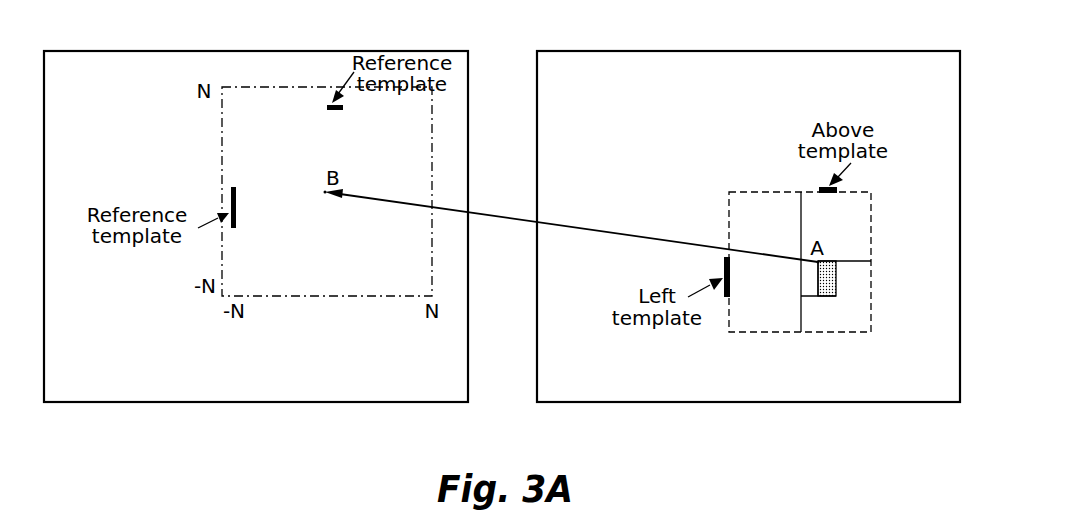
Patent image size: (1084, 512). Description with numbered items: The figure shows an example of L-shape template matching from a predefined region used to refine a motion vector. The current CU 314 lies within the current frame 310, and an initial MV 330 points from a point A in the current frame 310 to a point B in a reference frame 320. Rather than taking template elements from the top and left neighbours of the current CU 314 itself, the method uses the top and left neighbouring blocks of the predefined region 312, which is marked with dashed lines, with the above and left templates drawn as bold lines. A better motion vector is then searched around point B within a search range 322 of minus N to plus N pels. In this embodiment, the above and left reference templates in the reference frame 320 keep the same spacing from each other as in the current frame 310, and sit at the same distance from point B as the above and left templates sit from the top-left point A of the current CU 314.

The current frame 310 is at (874, 51).
The predefined region 312 is at (771, 332).
The current CU 314 is at (831, 283).
The reference frame 320 is at (378, 51).
The search range 322 is at (270, 87).
The initial MV 330 is at (478, 214).